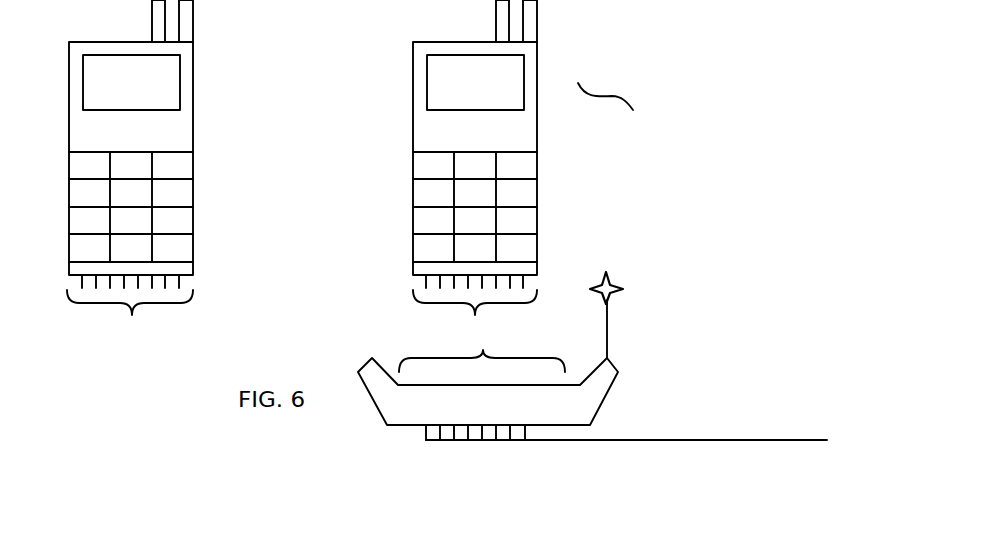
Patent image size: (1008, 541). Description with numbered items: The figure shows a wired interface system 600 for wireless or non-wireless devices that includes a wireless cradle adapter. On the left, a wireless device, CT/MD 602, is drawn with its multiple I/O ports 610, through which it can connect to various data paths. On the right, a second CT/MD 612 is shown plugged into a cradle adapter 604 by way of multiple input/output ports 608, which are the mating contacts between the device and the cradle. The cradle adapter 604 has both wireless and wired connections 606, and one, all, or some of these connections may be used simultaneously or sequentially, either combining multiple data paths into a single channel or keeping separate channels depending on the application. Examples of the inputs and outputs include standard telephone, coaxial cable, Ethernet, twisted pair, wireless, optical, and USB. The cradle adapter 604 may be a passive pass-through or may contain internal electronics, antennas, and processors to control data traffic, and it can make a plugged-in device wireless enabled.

The wired interface system 600 is at (607, 95).
The CT/MD 602 is at (193, 137).
The cradle adapter 604 is at (618, 358).
The wired connections 606 is at (688, 439).
The input/output ports 608 is at (483, 351).
The I/O ports 610 is at (133, 316).
The CT/MD 612 is at (413, 137).